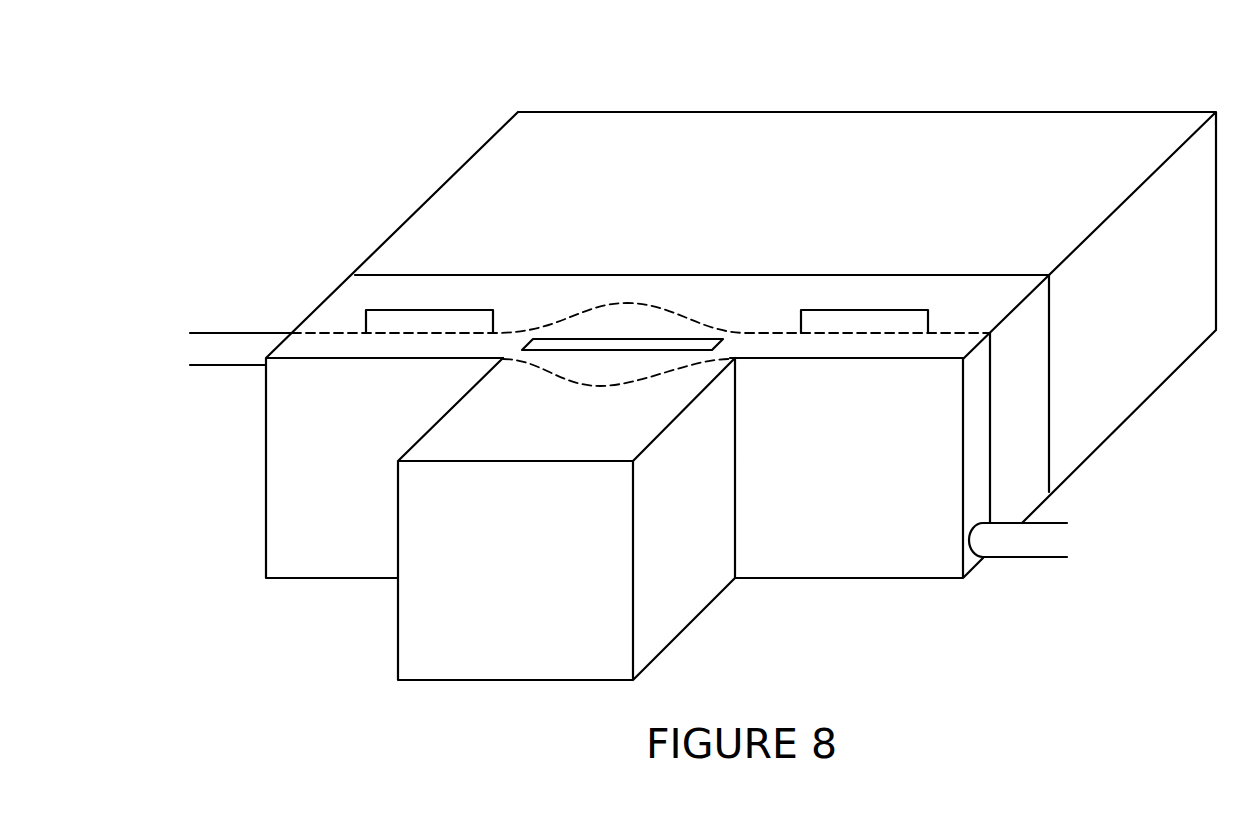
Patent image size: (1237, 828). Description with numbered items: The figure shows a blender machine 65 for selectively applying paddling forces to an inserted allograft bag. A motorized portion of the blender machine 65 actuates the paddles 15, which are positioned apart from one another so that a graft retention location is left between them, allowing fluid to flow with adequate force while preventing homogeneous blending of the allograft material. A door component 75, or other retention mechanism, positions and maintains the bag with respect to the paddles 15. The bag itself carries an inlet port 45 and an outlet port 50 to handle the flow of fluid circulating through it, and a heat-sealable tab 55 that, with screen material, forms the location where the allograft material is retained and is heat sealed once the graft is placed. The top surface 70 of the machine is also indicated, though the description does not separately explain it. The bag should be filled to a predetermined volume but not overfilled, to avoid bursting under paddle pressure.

The blender machine 65 is at (397, 135).
The top surface of housing 70 is at (730, 153).
The paddles 15 is at (403, 308).
The inlet port 45 is at (249, 328).
The heat-sealable tab 55 is at (620, 342).
The outlet port 50 is at (1017, 560).
The door component 75 is at (263, 580).